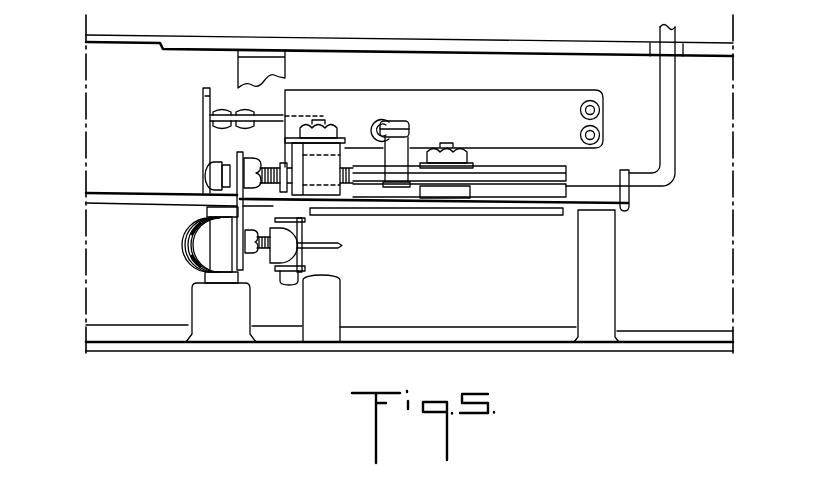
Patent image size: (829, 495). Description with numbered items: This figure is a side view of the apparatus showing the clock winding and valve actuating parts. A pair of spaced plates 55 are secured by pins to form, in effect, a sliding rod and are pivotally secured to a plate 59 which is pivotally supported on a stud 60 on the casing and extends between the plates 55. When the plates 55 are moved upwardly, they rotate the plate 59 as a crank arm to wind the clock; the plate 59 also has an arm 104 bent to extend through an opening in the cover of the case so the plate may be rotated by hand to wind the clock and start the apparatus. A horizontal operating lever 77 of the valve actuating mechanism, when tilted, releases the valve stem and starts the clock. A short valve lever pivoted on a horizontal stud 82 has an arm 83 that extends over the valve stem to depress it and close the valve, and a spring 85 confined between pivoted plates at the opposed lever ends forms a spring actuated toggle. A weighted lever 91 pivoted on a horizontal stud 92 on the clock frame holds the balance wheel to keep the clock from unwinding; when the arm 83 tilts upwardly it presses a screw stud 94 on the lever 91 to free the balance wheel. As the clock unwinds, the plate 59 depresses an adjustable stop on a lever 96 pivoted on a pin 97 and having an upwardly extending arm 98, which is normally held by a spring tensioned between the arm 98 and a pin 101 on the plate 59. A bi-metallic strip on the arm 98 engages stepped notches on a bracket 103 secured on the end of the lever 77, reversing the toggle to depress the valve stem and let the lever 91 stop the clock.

The spaced plates 55 is at (558, 193).
The plate 59 is at (644, 182).
The stud 60 is at (452, 146).
The horizontal operating lever 77 is at (203, 143).
The horizontal stud 82 is at (217, 249).
The arm 83 is at (240, 233).
The spring 85 is at (187, 243).
The lever 91 is at (286, 241).
The horizontal stud 92 is at (298, 260).
The screw stud 94 is at (253, 257).
The lever 96 is at (288, 149).
The pin 97 is at (325, 128).
The upwardly extending arm 98 is at (462, 100).
The pin 101 is at (397, 147).
The bracket 103 is at (270, 116).
The arm 104 is at (670, 90).